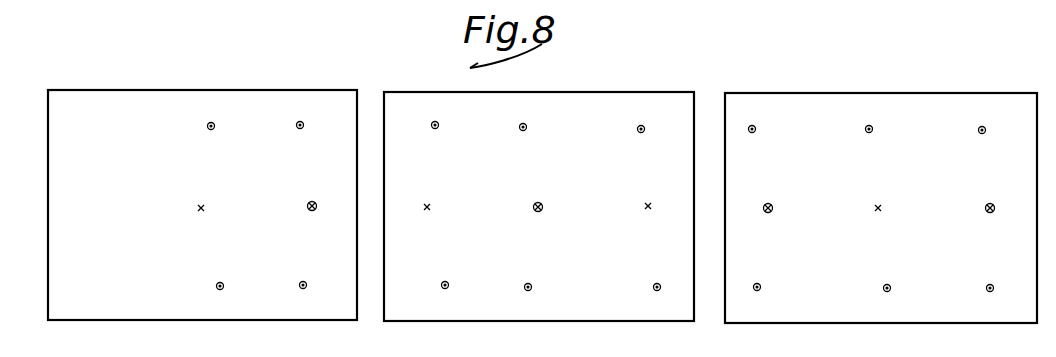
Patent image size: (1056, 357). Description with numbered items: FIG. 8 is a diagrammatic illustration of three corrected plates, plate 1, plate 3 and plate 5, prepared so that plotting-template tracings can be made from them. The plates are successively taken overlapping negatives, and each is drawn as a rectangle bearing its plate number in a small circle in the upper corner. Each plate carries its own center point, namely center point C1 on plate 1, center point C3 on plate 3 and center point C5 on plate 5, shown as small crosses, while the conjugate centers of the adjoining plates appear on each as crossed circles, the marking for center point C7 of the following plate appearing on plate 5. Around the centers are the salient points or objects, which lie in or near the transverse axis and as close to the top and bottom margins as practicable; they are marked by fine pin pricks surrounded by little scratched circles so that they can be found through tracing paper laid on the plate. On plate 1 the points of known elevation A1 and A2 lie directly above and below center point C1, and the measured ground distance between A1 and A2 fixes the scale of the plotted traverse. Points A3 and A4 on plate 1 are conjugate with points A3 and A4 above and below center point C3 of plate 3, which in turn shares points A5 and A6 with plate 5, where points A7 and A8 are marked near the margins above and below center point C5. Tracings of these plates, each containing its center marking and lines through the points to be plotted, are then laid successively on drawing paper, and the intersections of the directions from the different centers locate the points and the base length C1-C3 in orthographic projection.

The plate 1 is at (347, 99).
The plate 3 is at (684, 103).
The plate 5 is at (1024, 105).
The salient point A1 is at (435, 129).
The salient point A2 is at (457, 296).
The salient point A3 is at (304, 126).
The salient point A4 is at (306, 288).
The salient point A5 is at (645, 130).
The salient point A6 is at (657, 291).
The salient point A7 is at (986, 131).
The salient point A8 is at (993, 291).
The center point C1 is at (446, 201).
The center point C3 is at (322, 236).
The center point C5 is at (877, 212).
The center point C7 is at (990, 213).